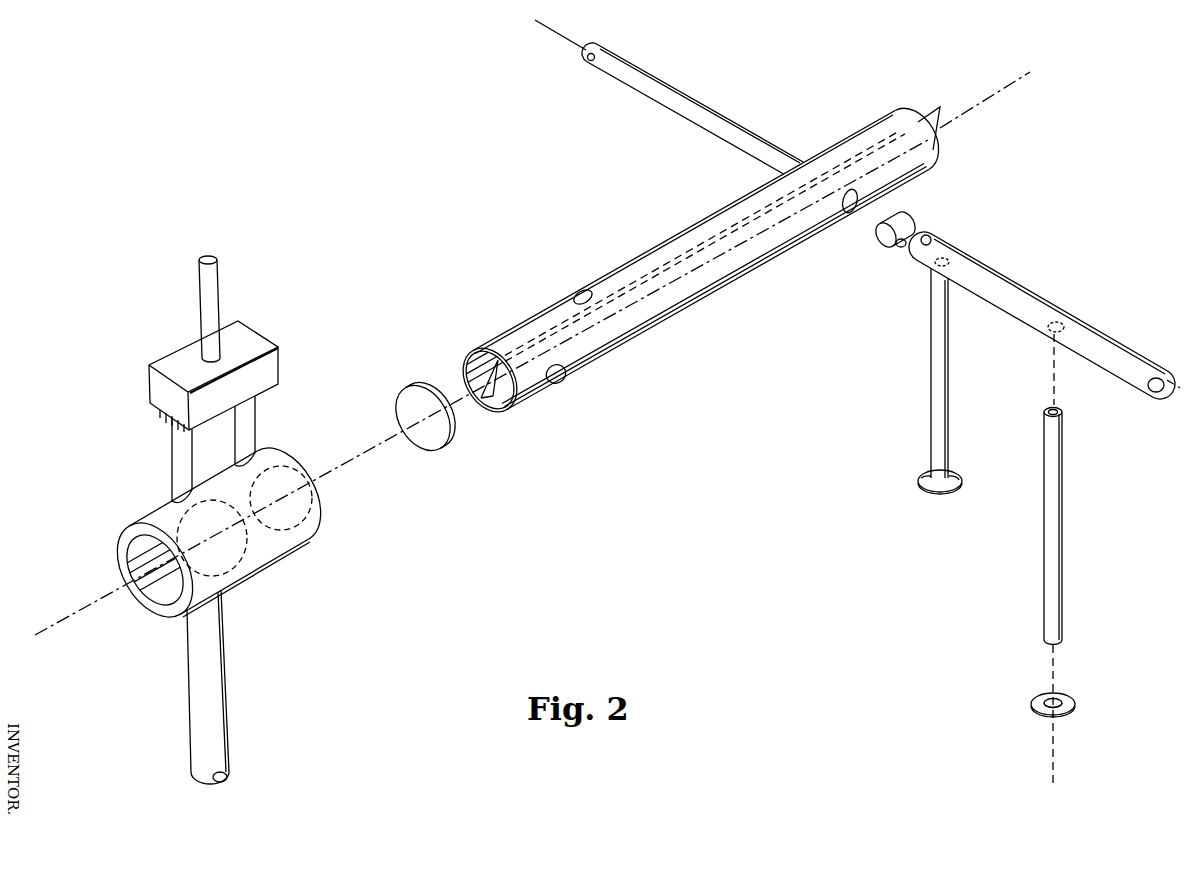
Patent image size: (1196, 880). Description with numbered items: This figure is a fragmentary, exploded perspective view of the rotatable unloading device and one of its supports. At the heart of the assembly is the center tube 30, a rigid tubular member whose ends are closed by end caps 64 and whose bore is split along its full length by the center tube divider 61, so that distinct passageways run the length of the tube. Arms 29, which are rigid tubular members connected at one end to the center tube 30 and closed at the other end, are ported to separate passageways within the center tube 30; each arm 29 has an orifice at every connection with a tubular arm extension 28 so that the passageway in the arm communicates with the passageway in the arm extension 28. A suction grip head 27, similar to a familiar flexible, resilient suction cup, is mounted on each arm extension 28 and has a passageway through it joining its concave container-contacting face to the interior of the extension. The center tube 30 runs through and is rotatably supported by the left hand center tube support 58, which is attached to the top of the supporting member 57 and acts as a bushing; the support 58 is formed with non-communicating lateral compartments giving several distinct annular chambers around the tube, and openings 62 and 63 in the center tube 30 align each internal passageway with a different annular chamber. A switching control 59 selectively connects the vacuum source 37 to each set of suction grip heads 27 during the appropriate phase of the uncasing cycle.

The suction grip head 27 is at (958, 496).
The tubular arm extension 28 is at (930, 422).
The arm 29 is at (762, 141).
The center tube 30 is at (696, 281).
The vacuum source 37 is at (218, 283).
The supporting member 57 is at (224, 665).
The left hand center tube support 58 is at (288, 548).
The switching control 59 is at (282, 370).
The center tube divider 61 is at (500, 393).
The opening 62 is at (575, 304).
The opening 63 is at (566, 366).
The end cap 64 is at (428, 450).